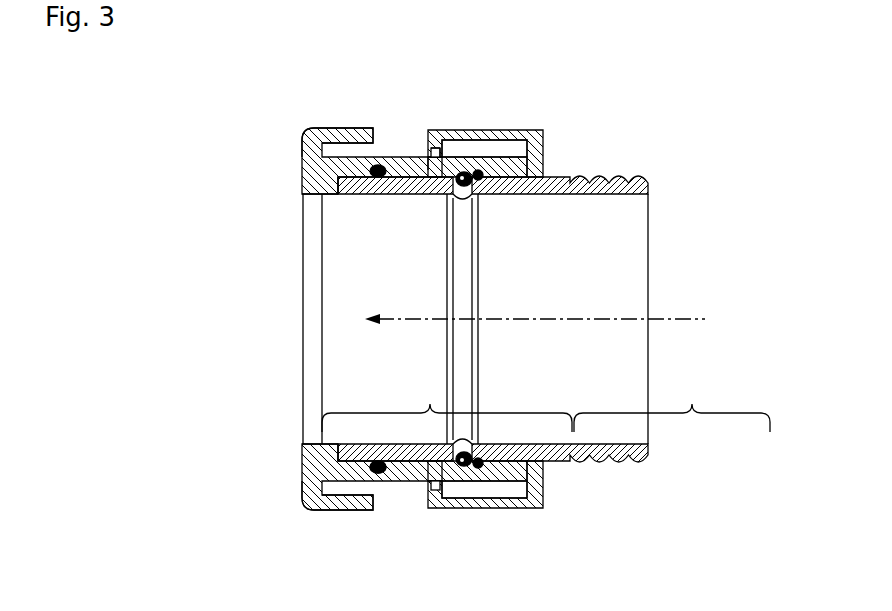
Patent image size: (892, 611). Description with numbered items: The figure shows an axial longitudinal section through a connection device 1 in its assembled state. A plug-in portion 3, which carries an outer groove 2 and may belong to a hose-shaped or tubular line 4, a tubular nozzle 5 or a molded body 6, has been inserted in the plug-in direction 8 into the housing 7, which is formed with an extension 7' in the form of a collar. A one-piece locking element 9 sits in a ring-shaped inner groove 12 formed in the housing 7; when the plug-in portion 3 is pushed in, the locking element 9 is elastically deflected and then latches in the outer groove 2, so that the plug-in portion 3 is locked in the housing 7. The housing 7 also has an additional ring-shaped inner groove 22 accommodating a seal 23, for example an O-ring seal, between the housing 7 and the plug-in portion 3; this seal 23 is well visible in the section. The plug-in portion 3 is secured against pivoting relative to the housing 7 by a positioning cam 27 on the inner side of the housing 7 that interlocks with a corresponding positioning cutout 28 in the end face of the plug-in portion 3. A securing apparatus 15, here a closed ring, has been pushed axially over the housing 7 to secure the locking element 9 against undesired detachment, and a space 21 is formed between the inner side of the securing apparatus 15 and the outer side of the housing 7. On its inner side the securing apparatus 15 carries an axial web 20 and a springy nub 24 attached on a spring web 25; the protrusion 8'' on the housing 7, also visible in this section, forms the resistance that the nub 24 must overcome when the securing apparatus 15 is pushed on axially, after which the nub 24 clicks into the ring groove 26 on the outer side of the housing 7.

The connection device 1 is at (176, 109).
The outer groove 2 is at (477, 190).
The plug-in portion 3 is at (398, 189).
The hose-shaped or tubular line 4 is at (621, 319).
The tubular nozzle 5 is at (621, 319).
The molded body 6 is at (621, 319).
The housing 7 is at (393, 330).
The extension 7' is at (278, 303).
The plug-in direction 8 is at (535, 306).
The protrusion 8'' is at (432, 204).
The locking element 9 is at (471, 170).
The inner groove 12 is at (457, 157).
The securing apparatus 15 is at (482, 140).
The axial web 20 is at (495, 145).
The space 21 is at (497, 490).
The inner groove 22 is at (425, 478).
The seal 23 is at (371, 166).
The nub 24 is at (436, 152).
The spring web 25 is at (430, 168).
The ring groove 26 is at (423, 468).
The positioning cam 27 is at (320, 182).
The positioning cutout 28 is at (337, 193).